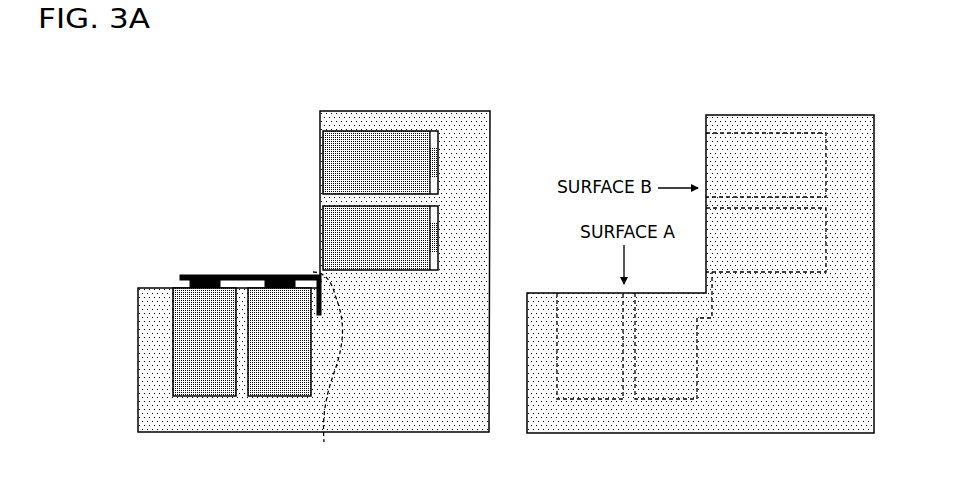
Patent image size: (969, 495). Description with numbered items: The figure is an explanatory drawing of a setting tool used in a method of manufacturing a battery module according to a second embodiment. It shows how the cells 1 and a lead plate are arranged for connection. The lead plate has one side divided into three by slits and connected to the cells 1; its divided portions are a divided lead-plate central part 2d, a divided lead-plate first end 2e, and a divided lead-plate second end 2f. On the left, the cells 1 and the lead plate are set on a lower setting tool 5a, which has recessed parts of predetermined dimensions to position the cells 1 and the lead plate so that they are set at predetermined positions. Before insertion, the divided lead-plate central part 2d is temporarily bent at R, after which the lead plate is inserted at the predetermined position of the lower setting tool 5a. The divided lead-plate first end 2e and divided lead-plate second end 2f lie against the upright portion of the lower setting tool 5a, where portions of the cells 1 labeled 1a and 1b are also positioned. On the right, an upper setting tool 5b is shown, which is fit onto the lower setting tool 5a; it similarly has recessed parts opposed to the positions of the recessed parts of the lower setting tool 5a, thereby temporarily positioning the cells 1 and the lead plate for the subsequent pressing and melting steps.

The cell 1 is at (202, 395).
The first external electrode 1a is at (190, 284).
The second external electrode 1b is at (327, 160).
The divided lead-plate central part 2d is at (243, 275).
The divided lead-plate first end 2e is at (320, 200).
The divided lead-plate second end 2f is at (321, 179).
The bend position R is at (328, 369).
The lower setting tool 5a is at (375, 413).
The upper setting tool 5b is at (743, 412).